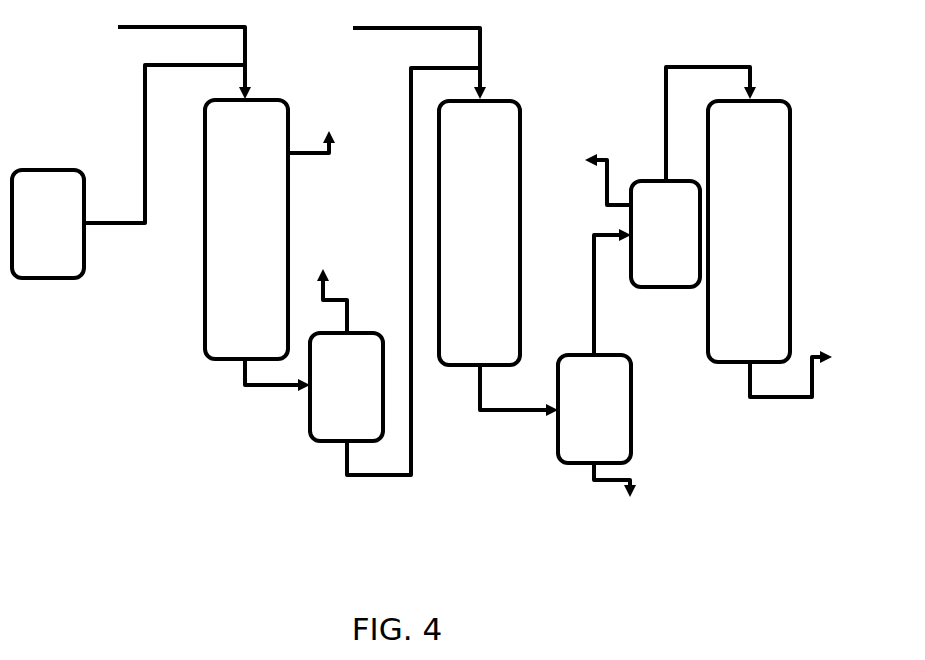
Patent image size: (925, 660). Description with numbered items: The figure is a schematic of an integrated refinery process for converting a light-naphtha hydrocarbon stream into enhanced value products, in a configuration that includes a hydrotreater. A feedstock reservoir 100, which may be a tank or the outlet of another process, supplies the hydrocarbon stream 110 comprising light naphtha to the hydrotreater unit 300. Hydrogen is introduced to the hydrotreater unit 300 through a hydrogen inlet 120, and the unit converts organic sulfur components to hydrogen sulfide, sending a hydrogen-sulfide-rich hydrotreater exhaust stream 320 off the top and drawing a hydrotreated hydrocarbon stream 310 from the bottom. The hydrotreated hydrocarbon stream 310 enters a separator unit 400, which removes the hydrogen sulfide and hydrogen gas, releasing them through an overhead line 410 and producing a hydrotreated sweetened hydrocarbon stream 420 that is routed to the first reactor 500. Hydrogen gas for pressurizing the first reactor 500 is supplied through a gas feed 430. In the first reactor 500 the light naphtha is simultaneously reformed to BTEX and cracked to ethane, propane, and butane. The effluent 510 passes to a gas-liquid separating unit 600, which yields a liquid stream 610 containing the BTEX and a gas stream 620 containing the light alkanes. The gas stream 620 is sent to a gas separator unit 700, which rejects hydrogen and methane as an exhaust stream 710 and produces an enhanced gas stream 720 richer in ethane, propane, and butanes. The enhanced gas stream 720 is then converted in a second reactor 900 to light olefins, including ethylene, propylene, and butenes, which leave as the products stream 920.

The feedstock reservoir 100 is at (48, 224).
The hydrocarbon stream 110 is at (164, 144).
The hydrogen inlet 120 is at (161, 62).
The hydrotreater unit 300 is at (246, 229).
The hydrotreated hydrocarbon stream 310 is at (267, 389).
The hydrotreater exhaust stream 320 is at (311, 156).
The separator unit 400 is at (346, 387).
The separator overhead stream 410 is at (327, 284).
The hydrotreated sweetened hydrocarbon stream 420 is at (413, 288).
The gas feed 430 is at (397, 59).
The first reactor 500 is at (479, 233).
The effluent 510 is at (516, 401).
The gas-liquid separating unit 600 is at (594, 409).
The liquid stream 610 is at (619, 495).
The gas stream 620 is at (593, 292).
The gas separator unit 700 is at (665, 234).
The exhaust stream 710 is at (590, 168).
The enhanced gas stream 720 is at (690, 118).
The second reactor 900 is at (749, 231).
The products stream 920 is at (812, 371).